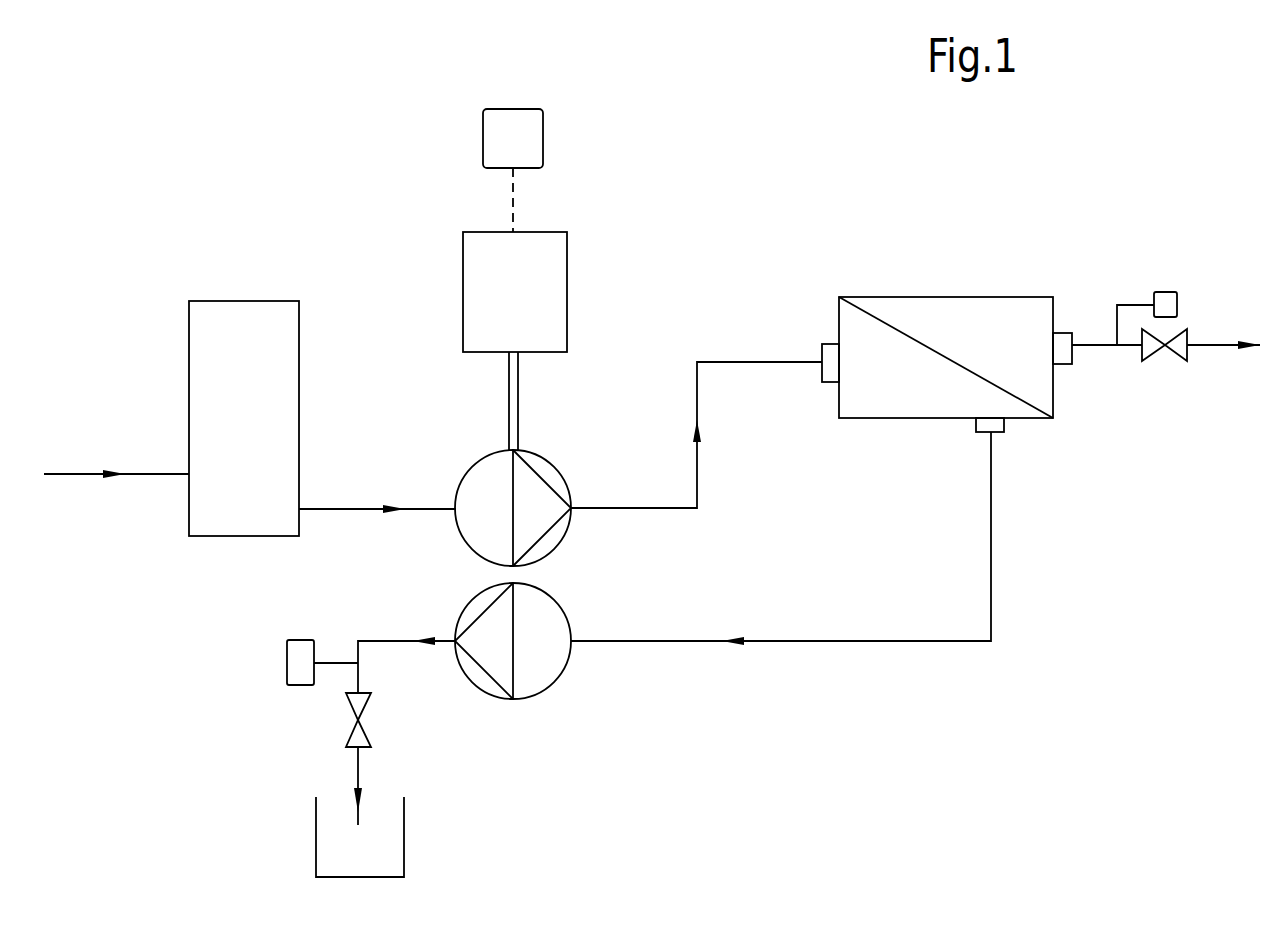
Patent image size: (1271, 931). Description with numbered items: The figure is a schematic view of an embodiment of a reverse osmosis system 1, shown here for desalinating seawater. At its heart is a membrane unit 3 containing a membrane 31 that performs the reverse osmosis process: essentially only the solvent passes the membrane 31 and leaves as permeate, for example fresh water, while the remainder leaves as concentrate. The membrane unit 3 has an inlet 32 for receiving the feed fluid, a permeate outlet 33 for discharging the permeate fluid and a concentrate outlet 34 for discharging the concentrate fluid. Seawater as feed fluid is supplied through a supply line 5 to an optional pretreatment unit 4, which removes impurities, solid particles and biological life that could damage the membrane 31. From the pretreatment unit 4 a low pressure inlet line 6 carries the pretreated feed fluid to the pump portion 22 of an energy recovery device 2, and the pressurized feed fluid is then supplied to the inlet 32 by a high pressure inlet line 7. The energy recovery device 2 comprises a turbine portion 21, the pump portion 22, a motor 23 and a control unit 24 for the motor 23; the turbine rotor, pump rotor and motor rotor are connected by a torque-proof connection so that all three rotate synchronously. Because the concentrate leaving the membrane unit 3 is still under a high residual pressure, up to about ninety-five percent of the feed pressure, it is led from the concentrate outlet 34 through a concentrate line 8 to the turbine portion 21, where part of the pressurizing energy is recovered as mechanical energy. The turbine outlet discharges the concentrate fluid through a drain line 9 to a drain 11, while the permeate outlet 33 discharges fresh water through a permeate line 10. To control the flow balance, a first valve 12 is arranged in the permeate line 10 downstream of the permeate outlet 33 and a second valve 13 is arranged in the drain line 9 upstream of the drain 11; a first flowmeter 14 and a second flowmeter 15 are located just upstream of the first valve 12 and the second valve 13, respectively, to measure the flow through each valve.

The reverse osmosis system 1 is at (1055, 185).
The energy recovery device 2 is at (590, 201).
The membrane unit 3 is at (907, 282).
The pretreatment unit 4 is at (242, 292).
The supply line 5 is at (142, 478).
The low pressure inlet line 6 is at (352, 505).
The high pressure inlet line 7 is at (731, 360).
The concentrate line 8 is at (896, 645).
The drain line 9 is at (378, 640).
The permeate line 10 is at (1100, 352).
The drain 11 is at (404, 862).
The first valve 12 is at (1170, 358).
The second valve 13 is at (366, 728).
The first flowmeter 14 is at (1168, 300).
The second flowmeter 15 is at (296, 660).
The turbine portion 21 is at (558, 677).
The pump portion 22 is at (562, 535).
The motor 23 is at (567, 292).
The control unit 24 is at (543, 131).
The membrane 31 is at (950, 360).
The inlet 32 is at (823, 386).
The permeate outlet 33 is at (1066, 331).
The concentrate outlet 34 is at (1004, 430).